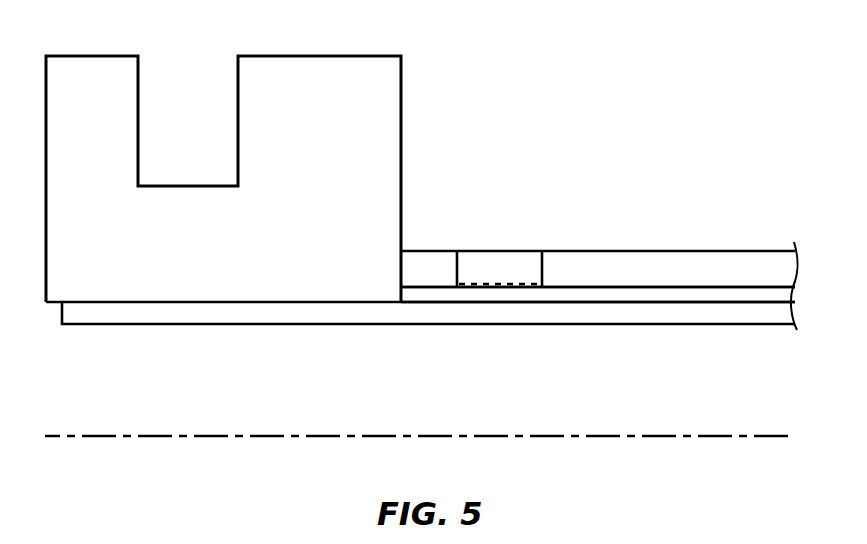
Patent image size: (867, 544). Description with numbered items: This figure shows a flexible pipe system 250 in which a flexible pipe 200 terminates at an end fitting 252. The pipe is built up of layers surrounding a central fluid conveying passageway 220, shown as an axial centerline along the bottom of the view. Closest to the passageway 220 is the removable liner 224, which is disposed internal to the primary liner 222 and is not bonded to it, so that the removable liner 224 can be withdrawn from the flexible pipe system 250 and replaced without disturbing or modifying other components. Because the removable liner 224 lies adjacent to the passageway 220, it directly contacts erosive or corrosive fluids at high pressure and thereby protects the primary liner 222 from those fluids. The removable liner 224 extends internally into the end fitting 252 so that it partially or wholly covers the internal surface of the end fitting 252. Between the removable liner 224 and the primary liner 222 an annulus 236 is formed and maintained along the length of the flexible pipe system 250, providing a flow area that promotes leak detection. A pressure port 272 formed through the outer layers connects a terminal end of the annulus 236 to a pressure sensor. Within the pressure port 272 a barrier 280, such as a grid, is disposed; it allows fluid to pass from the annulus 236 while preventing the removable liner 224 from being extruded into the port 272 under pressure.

The flexible pipe 200 is at (690, 163).
The flexible pipe system 250 is at (652, 100).
The end fitting 252 is at (307, 73).
The primary liner 222 is at (650, 257).
The removable liner 224 is at (420, 307).
The annulus 236 is at (602, 297).
The pressure port 272 is at (485, 263).
The barrier 280 is at (510, 285).
The fluid conveying passageway 220 is at (273, 437).